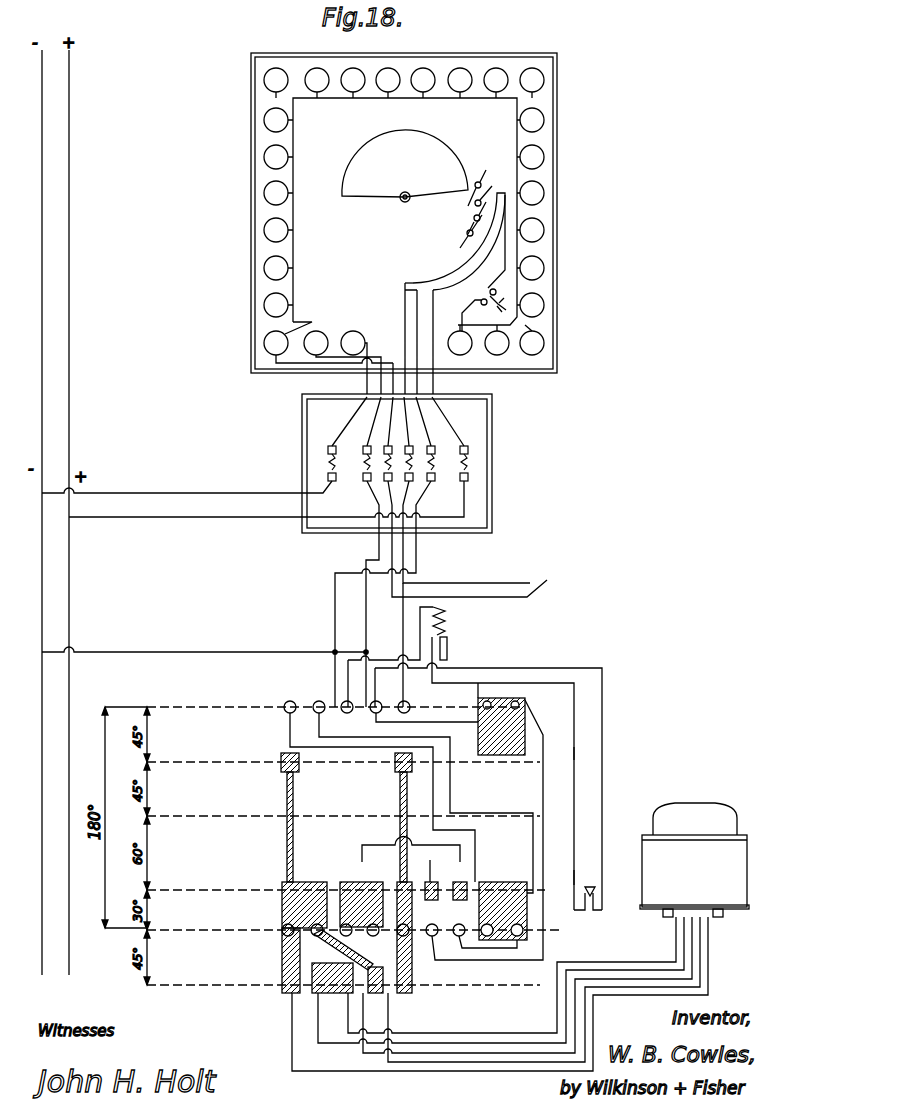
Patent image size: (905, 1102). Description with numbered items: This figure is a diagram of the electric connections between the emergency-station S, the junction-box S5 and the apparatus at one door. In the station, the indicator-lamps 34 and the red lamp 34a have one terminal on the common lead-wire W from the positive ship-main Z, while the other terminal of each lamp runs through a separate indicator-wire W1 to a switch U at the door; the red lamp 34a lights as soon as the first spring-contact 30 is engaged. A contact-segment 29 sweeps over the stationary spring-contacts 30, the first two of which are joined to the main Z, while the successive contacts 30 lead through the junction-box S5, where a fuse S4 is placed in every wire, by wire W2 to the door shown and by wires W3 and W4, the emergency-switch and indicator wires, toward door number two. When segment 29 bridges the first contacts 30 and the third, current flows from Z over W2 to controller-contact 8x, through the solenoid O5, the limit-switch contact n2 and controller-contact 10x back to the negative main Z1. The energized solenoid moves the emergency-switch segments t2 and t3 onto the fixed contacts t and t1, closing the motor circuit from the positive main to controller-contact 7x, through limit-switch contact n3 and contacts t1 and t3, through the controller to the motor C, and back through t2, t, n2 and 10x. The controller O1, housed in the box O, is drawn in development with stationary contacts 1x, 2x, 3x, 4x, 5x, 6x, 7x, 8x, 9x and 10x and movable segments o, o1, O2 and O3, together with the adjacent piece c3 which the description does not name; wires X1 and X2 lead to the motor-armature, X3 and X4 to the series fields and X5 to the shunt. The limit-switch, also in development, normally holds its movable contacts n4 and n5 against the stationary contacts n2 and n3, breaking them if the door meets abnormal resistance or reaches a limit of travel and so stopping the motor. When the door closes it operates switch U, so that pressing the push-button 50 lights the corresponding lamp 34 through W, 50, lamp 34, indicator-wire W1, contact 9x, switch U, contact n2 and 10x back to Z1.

The contact-segment 29 is at (405, 166).
The stationary spring-contacts 30 is at (480, 181).
The indicator-lamps 34 is at (268, 272).
The red lamp 34a is at (356, 330).
The push-button 50 is at (500, 290).
The switchboard S is at (557, 234).
The common lead-wire W is at (275, 518).
The indicator-wire W1 is at (325, 362).
The emergency-switch wire W2 is at (458, 282).
The emergency-switch wire W3 is at (505, 583).
The indicator-wire W4 is at (483, 565).
The fuse S4 is at (398, 465).
The junction-box S5 is at (492, 472).
The negative ship-main Z1 is at (42, 325).
The positive ship-main Z is at (69, 370).
The solenoid O5 is at (447, 636).
The limit-switch stationary contact n2 is at (515, 702).
The limit-switch movable contact n4 is at (574, 747).
The limit-switch movable contact n5 is at (574, 873).
The switch U is at (600, 894).
The motor C is at (694, 860).
The stationary controller-contact 6x is at (286, 702).
The stationary controller-contact 7x is at (315, 702).
The stationary controller-contact 8x is at (347, 713).
The stationary controller-contact 9x is at (424, 718).
The stationary controller-contact 10x is at (410, 706).
The motor-controller O1 is at (346, 873).
The controller movable segment O2 is at (282, 884).
The box O is at (278, 944).
The movable segment o1 is at (356, 882).
The movable segment o is at (411, 855).
The movable contact-segment t2 is at (434, 878).
The movable contact-segment t3 is at (465, 884).
The limit-switch stationary contact n3 is at (517, 936).
The stationary controller-contact 1x is at (284, 934).
The stationary controller-contact 2x is at (315, 936).
The stationary controller-contact 3x is at (344, 936).
The stationary controller-contact 4x is at (376, 936).
The stationary controller-contact 5x is at (409, 936).
The fixed contact t is at (434, 937).
The fixed contact t1 is at (462, 937).
The movable segment O3 is at (312, 988).
The core c3 is at (352, 994).
The armature wire X1 is at (590, 958).
The armature wire X2 is at (500, 994).
The series-field wire X3 is at (632, 970).
The series-field wire X4 is at (705, 980).
The shunt wire X5 is at (697, 950).